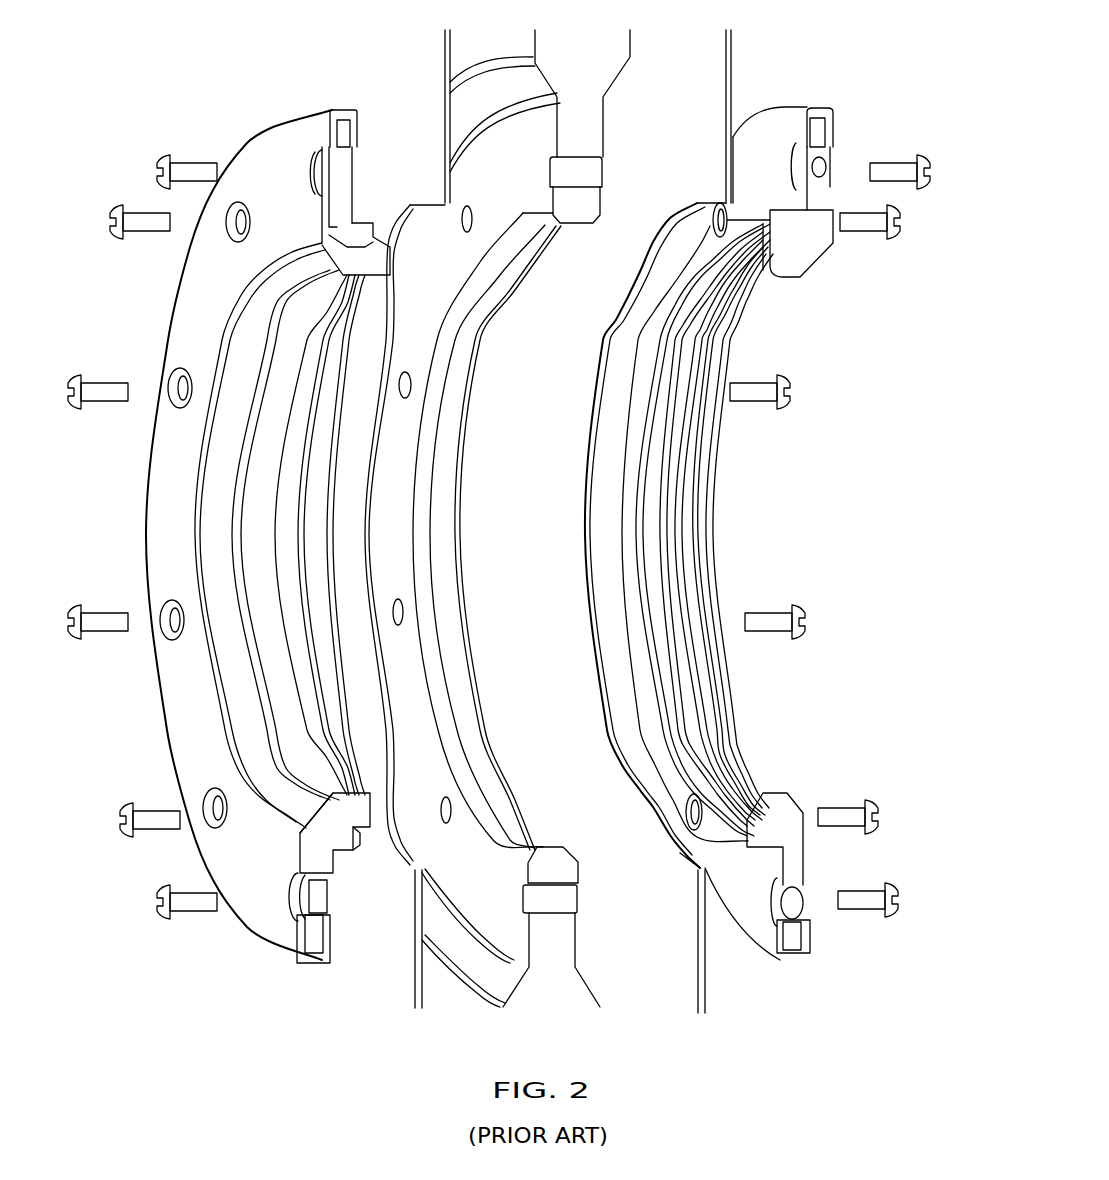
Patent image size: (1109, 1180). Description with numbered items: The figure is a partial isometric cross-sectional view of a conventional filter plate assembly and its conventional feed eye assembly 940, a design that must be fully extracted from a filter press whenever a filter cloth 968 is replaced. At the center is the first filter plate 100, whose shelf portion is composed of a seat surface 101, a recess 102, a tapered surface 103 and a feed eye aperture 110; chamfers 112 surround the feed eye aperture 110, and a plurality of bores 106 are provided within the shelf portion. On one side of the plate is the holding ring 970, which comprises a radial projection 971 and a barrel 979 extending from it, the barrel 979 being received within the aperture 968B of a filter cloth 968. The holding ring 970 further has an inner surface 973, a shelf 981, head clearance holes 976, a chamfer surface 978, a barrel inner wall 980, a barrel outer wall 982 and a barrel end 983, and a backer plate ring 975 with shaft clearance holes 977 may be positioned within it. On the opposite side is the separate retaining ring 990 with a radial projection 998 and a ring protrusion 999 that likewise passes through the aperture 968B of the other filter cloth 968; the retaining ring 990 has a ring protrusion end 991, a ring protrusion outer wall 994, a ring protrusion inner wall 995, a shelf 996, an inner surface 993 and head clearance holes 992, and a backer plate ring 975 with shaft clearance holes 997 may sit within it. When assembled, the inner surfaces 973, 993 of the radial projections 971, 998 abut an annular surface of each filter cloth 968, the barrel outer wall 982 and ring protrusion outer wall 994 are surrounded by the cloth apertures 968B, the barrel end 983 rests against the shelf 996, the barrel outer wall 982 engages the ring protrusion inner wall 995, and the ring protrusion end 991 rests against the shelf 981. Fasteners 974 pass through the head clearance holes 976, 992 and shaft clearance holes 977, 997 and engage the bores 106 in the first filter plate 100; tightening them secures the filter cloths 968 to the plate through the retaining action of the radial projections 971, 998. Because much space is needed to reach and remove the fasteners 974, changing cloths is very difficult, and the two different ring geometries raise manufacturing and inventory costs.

The first filter plate 100 is at (605, 63).
The seat surface 101 is at (517, 195).
The recess 102 is at (472, 112).
The tapered surface 103 is at (513, 990).
The bores 106 is at (583, 168).
The feed eye aperture 110 is at (478, 758).
The chamfers 112 is at (440, 585).
The feed eye assembly 940 is at (804, 64).
The filter cloth 968 is at (730, 52).
The aperture 968B is at (587, 458).
The holding ring 970 is at (235, 983).
The radial projection 971 is at (258, 165).
The inner surface 973 is at (320, 947).
The fasteners 974 is at (101, 630).
The backer plate ring 975 is at (338, 135).
The head clearance holes 976 is at (285, 905).
The shaft clearance holes 977 is at (318, 906).
The chamfer surface 978 is at (240, 712).
The barrel 979 is at (363, 823).
The barrel inner wall 980 is at (282, 350).
The shelf 981 is at (352, 844).
The barrel outer wall 982 is at (378, 240).
The barrel end 983 is at (388, 259).
The retaining ring 990 is at (776, 986).
The ring protrusion end 991 is at (758, 230).
The head clearance holes 992 is at (805, 900).
The inner surface 993 is at (753, 932).
The ring protrusion outer wall 994 is at (757, 842).
The ring protrusion inner wall 995 is at (693, 277).
The shelf 996 is at (760, 262).
The shaft clearance holes 997 is at (820, 172).
The radial projection 998 is at (790, 957).
The ring protrusion 999 is at (757, 840).